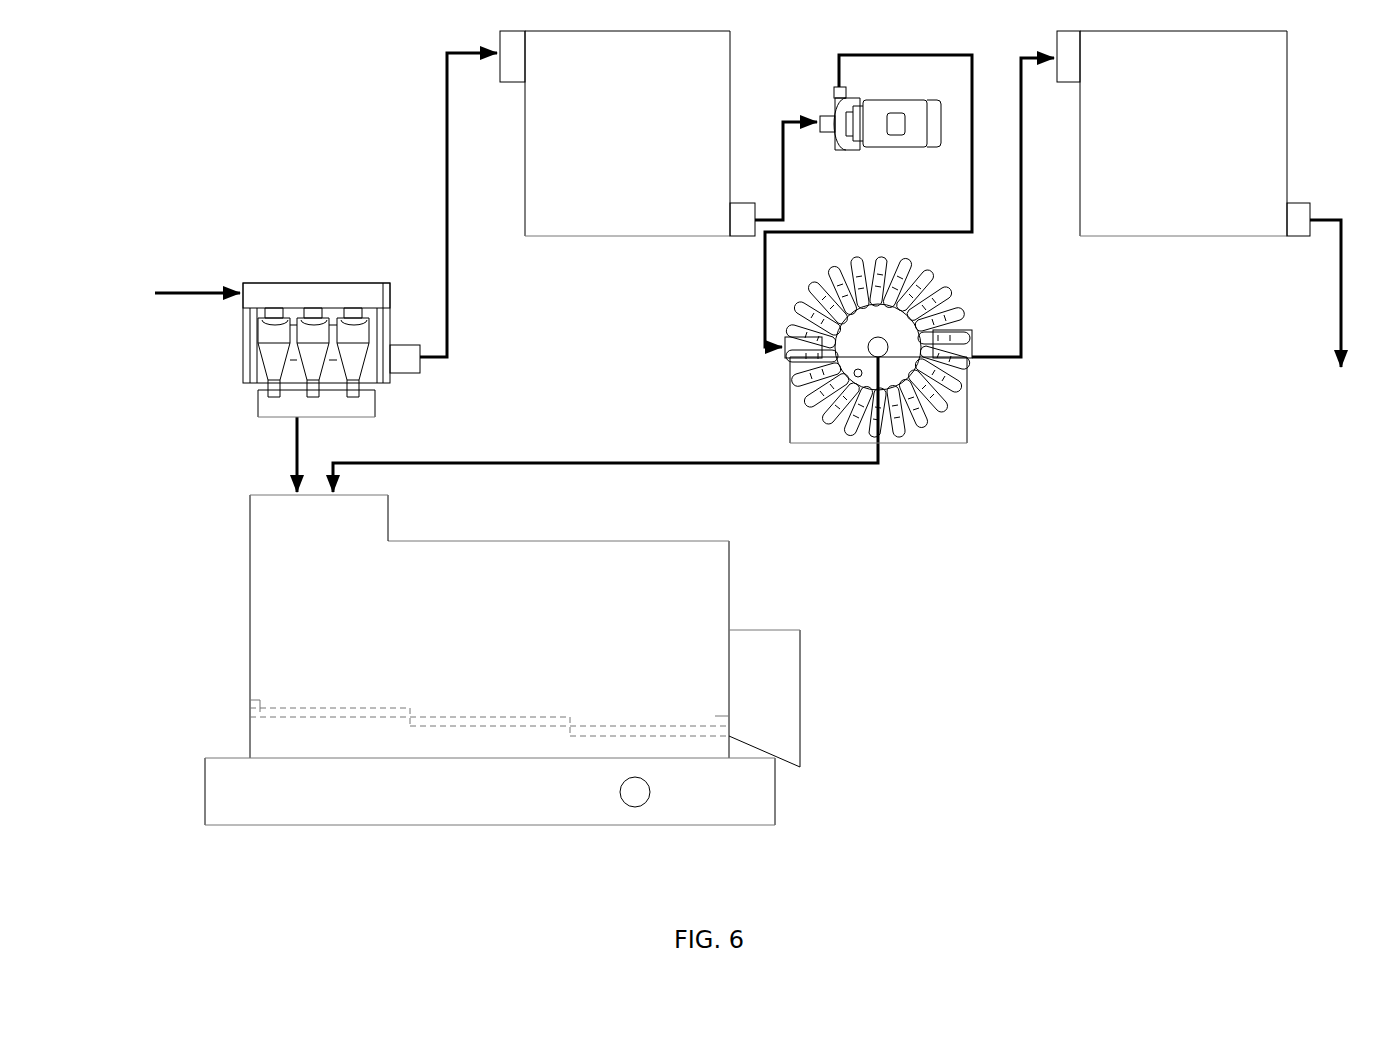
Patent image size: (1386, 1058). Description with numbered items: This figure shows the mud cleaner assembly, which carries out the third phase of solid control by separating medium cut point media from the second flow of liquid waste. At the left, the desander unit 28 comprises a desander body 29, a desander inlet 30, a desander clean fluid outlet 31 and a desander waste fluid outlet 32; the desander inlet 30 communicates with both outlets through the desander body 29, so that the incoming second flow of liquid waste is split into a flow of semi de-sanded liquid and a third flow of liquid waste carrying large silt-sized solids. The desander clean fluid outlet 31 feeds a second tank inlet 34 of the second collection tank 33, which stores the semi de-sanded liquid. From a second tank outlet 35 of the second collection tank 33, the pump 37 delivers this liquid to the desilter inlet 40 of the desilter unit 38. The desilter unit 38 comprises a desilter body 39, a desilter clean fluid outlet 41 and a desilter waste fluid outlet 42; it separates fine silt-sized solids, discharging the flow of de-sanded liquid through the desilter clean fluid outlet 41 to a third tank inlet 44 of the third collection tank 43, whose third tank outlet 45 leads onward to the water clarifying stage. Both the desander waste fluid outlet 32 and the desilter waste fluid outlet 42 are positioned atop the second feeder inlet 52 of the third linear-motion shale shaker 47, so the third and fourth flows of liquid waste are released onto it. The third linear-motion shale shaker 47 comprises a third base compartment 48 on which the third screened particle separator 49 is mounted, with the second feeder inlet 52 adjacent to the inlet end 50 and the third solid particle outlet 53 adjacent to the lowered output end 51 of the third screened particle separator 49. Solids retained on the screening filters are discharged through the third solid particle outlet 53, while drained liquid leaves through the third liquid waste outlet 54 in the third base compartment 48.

The desander unit 28 is at (310, 320).
The desander body 29 is at (243, 345).
The desander inlet 30 is at (340, 283).
The desander clean fluid outlet 31 is at (405, 373).
The desander waste fluid outlet 32 is at (258, 408).
The second collection tank 33 is at (608, 236).
The second tank inlet 34 is at (507, 82).
The second tank outlet 35 is at (737, 203).
The pump 37 is at (917, 147).
The desilter unit 38 is at (899, 372).
The desilter body 39 is at (948, 443).
The desilter inlet 40 is at (785, 358).
The desilter clean fluid outlet 41 is at (968, 332).
The desilter waste fluid outlet 42 is at (878, 337).
The third collection tank 43 is at (1190, 236).
The third tank inlet 44 is at (1067, 82).
The third tank outlet 45 is at (1298, 203).
The third linear-motion shale shaker 47 is at (507, 686).
The third base compartment 48 is at (346, 825).
The third screened particle separator 49 is at (510, 717).
The inlet end 50 is at (258, 702).
The lowered output end 51 is at (723, 716).
The second feeder inlet 52 is at (388, 510).
The third solid particle outlet 53 is at (797, 700).
The third liquid waste outlet 54 is at (645, 792).